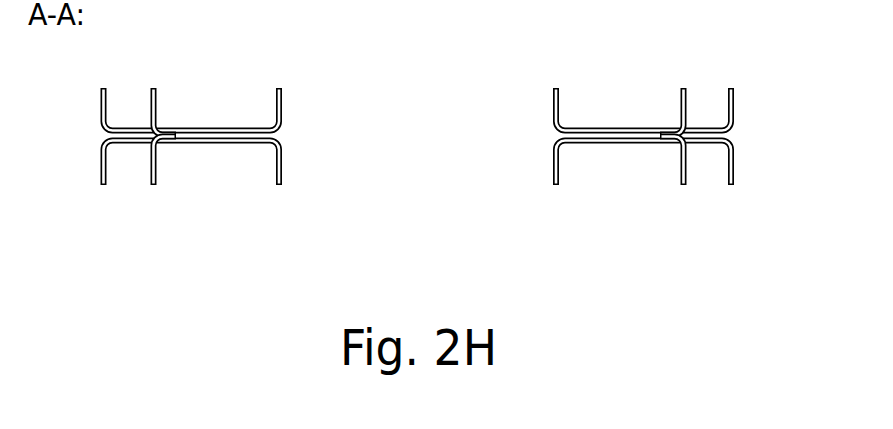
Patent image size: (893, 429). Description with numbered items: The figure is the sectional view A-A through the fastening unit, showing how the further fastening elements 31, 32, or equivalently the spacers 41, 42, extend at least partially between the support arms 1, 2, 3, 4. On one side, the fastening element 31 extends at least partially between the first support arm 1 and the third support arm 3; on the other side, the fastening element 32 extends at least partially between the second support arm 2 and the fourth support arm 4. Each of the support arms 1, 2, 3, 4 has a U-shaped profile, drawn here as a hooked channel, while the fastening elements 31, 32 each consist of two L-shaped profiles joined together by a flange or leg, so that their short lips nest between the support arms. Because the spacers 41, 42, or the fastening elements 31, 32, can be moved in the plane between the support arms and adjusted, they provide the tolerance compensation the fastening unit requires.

The first support arm 1 is at (605, 131).
The second support arm 2 is at (209, 131).
The third support arm 3 is at (610, 143).
The fourth support arm 4 is at (208, 144).
The fastening element 31 is at (726, 172).
The spacer 41 is at (686, 136).
The fastening element 32 is at (110, 171).
The spacer 42 is at (149, 135).